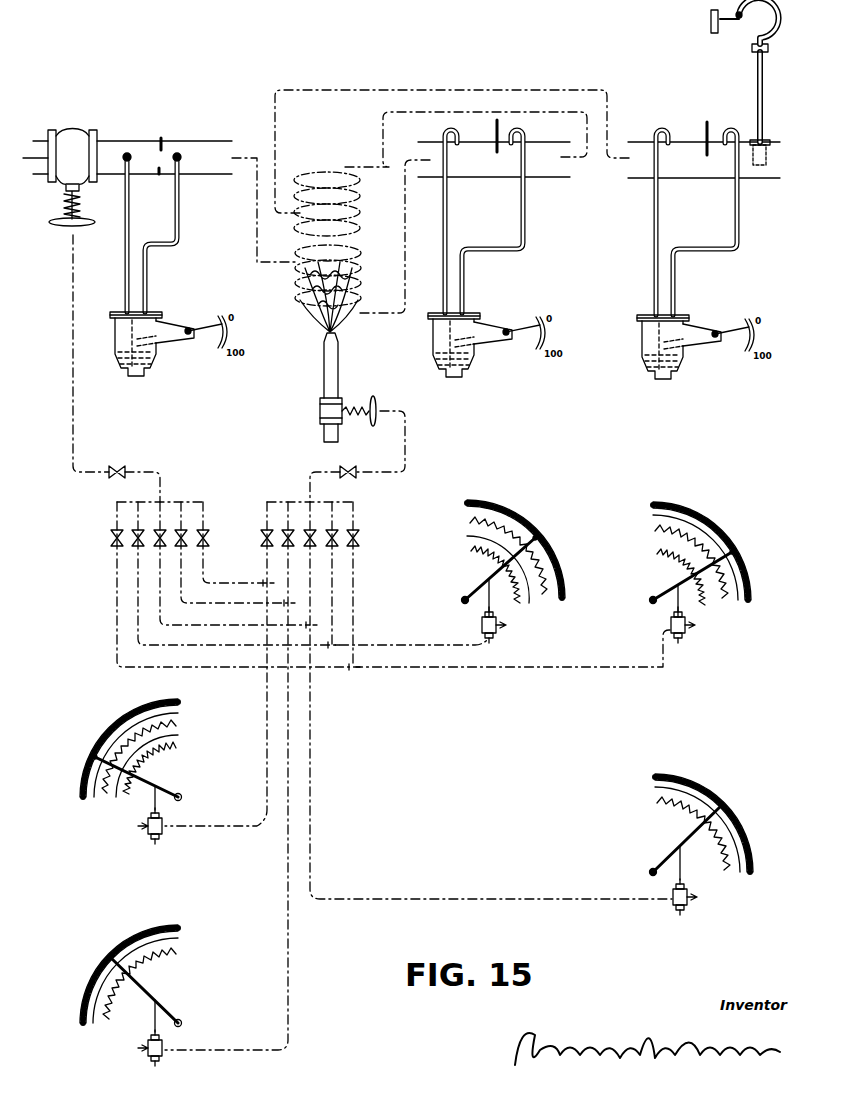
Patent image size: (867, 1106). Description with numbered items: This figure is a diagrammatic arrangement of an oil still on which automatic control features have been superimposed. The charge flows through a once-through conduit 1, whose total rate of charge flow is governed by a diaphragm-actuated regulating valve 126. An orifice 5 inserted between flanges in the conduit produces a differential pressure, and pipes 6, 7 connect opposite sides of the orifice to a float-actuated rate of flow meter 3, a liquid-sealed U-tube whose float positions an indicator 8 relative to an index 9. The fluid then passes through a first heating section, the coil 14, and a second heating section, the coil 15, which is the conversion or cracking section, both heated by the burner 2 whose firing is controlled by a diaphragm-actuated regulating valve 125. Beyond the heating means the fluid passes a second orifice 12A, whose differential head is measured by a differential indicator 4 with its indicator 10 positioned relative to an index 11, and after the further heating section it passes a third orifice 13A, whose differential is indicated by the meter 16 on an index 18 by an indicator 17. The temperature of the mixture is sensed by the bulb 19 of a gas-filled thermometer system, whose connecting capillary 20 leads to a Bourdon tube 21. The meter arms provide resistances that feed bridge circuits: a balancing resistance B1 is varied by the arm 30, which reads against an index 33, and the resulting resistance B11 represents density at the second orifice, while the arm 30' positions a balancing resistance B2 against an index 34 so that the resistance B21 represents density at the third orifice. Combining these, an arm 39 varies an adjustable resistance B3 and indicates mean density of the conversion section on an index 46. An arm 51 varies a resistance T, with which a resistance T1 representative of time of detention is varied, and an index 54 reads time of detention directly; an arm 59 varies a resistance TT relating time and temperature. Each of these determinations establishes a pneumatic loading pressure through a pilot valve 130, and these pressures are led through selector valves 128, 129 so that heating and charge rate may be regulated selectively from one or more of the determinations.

The conduit 1 is at (202, 176).
The regulating valve 126 is at (64, 132).
The orifice 5 is at (160, 170).
The pipe 6 is at (124, 255).
The pipe 7 is at (155, 255).
The rate of flow meter 3 is at (114, 338).
The indicator 8 is at (203, 322).
The index 9 is at (232, 338).
The second heating section 15 is at (362, 212).
The first heating section 14 is at (362, 285).
The burner 2 is at (339, 382).
The regulating valve 125 is at (375, 404).
The orifice 12A is at (496, 149).
The differential indicator 4 is at (433, 350).
The indicator 10 is at (523, 332).
The index 11 is at (549, 340).
The orifice 13A is at (706, 150).
The meter 16 is at (641, 356).
The indicator 17 is at (733, 332).
The index 18 is at (756, 341).
The bulb 19 is at (765, 160).
The connecting capillary 20 is at (759, 108).
The Bourdon tube 21 is at (755, 42).
The selector valve 128 is at (368, 584).
The selector valve 129 is at (418, 776).
The index 33 is at (494, 505).
The balancing resistance B1 is at (468, 530).
The arm 30 is at (490, 589).
The resistance B11 is at (513, 600).
The index 34 is at (707, 520).
The balancing resistance B2 is at (655, 532).
The resistance B21 is at (656, 566).
The arm 30' is at (676, 583).
The pilot valve 130 is at (692, 626).
The index 54 is at (123, 715).
The resistance T is at (181, 723).
The resistance T1 is at (181, 746).
The arm 51 is at (163, 785).
The resistance TT is at (180, 954).
The arm 59 is at (158, 996).
The index 46 is at (712, 786).
The adjustable resistance B3 is at (672, 806).
The arm 39 is at (666, 854).